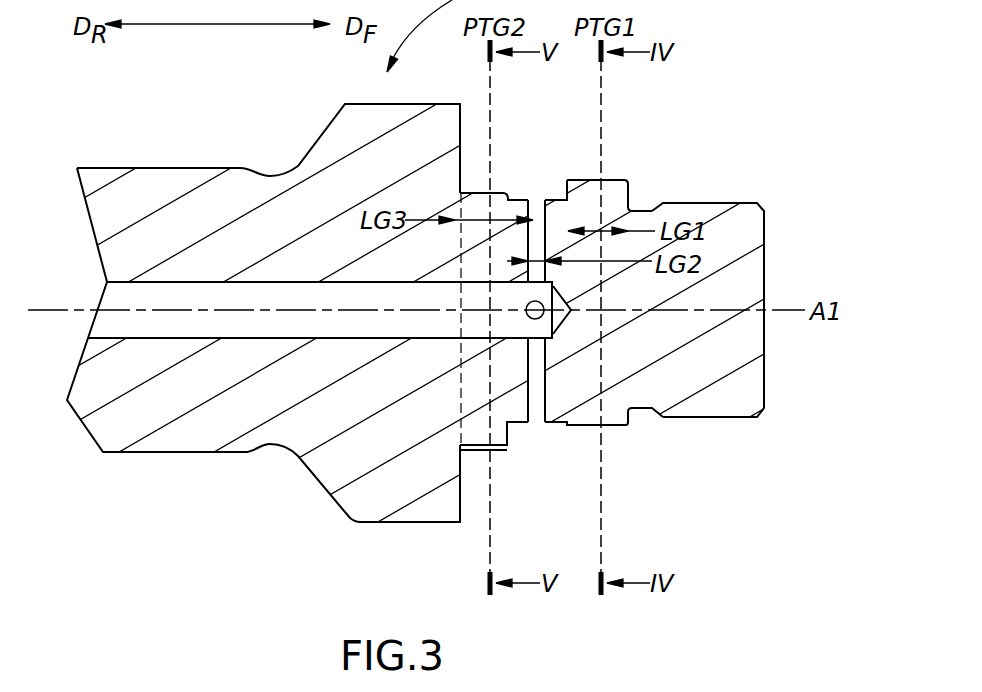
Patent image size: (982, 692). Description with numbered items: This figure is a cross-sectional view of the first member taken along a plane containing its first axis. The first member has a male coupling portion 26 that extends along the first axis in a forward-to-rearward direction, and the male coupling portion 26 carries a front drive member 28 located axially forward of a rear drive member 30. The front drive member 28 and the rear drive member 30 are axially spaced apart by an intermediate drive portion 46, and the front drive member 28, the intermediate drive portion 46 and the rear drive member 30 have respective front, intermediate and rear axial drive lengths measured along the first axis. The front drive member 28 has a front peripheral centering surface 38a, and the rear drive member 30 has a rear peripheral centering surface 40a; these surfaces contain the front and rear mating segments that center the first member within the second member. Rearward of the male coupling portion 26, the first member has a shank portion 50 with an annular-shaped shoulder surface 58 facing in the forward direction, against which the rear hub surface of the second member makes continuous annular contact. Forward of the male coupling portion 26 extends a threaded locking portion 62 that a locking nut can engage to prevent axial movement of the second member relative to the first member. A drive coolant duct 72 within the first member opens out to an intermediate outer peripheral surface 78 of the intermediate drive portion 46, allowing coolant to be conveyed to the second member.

The shank portion 50 is at (179, 173).
The rear peripheral centering surface 40a is at (497, 192).
The rear drive member 30 is at (500, 448).
The shoulder surface 58 is at (462, 497).
The drive coolant duct 72 is at (531, 200).
The intermediate outer peripheral surface 78 is at (556, 198).
The front drive member 28 is at (618, 190).
The intermediate drive portion 46 is at (550, 419).
The front peripheral centering surface 38a is at (617, 426).
The threaded locking portion 62 is at (735, 190).
The male coupling portion 26 is at (637, 368).